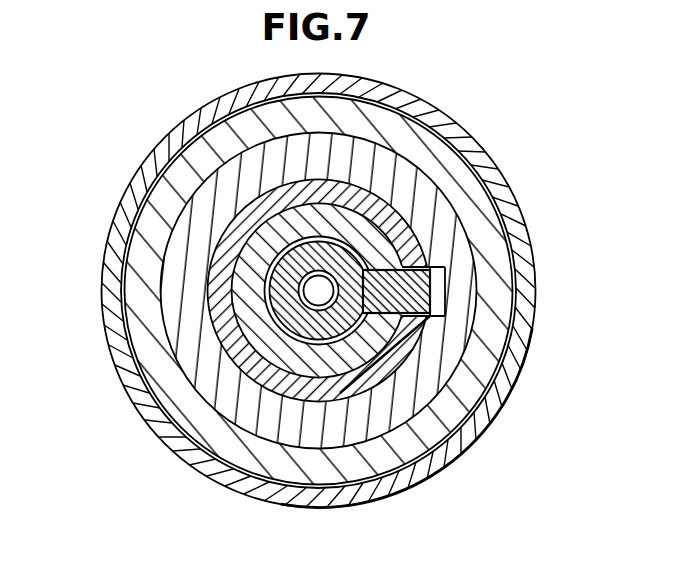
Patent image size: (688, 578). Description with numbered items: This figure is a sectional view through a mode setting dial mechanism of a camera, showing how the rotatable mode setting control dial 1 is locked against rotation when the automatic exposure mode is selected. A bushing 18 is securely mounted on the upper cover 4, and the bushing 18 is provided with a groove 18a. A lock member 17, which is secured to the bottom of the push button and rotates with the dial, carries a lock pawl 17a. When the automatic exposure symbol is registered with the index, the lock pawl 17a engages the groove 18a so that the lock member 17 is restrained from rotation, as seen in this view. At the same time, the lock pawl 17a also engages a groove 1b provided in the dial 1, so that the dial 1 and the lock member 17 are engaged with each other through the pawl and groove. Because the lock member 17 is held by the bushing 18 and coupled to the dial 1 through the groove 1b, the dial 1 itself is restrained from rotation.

The mode setting control dial 1 is at (400, 131).
The groove 1b is at (445, 266).
The upper cover 4 is at (400, 102).
The lock member 17 is at (400, 224).
The lock pawl 17a is at (412, 288).
The bushing 18 is at (510, 390).
The groove 18a is at (415, 332).